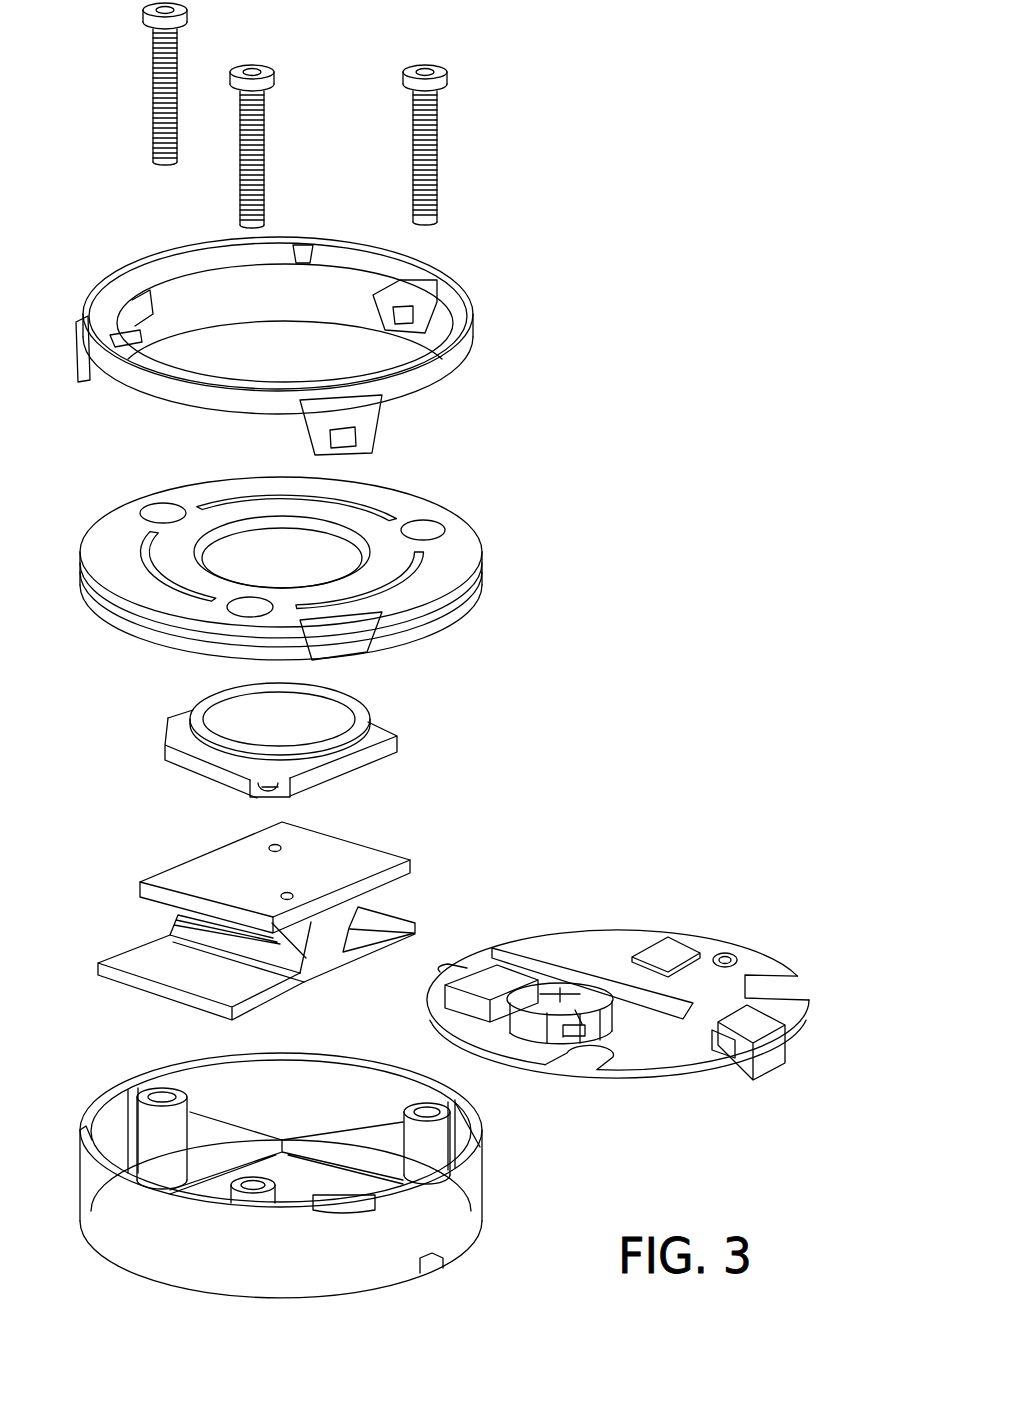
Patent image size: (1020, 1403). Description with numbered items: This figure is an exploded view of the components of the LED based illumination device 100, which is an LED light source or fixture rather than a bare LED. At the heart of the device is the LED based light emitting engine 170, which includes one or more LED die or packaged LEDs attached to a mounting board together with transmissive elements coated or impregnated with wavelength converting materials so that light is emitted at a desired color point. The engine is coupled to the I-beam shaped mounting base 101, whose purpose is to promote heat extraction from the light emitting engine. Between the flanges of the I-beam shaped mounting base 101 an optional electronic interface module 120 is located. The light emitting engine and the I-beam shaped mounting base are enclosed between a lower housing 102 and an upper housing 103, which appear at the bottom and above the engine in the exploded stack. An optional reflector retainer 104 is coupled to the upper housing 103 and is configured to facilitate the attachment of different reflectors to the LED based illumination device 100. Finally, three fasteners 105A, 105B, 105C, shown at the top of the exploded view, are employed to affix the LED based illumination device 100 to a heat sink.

The LED based illumination device 100 is at (748, 113).
The I-beam shaped mounting base 101 is at (368, 862).
The lower housing 102 is at (470, 1195).
The upper housing 103 is at (466, 552).
The reflector retainer 104 is at (468, 310).
The fastener 105A is at (440, 162).
The fastener 105B is at (150, 82).
The fastener 105C is at (266, 162).
The electronic interface module 120 is at (617, 945).
The LED based light emitting engine 170 is at (380, 737).